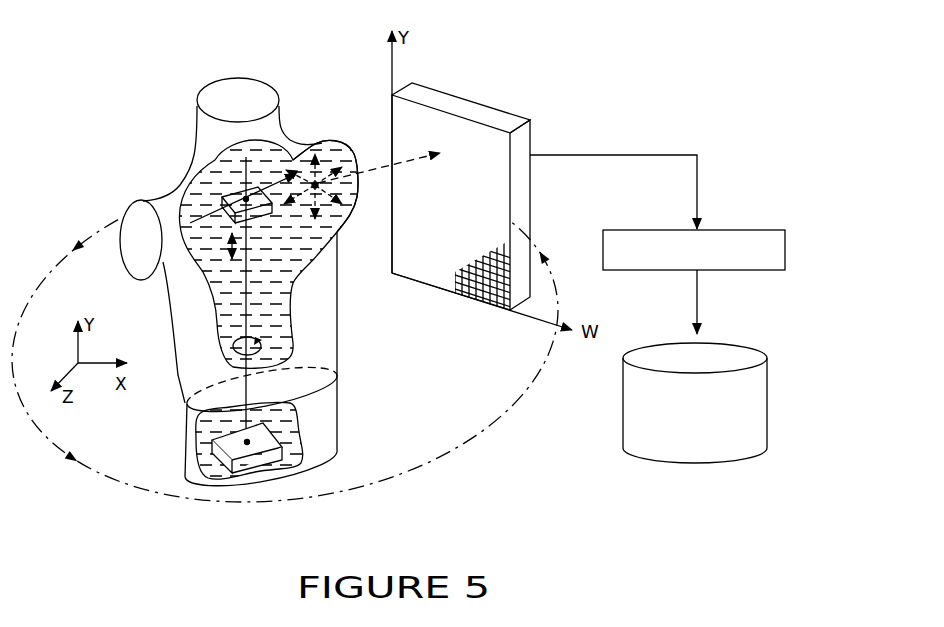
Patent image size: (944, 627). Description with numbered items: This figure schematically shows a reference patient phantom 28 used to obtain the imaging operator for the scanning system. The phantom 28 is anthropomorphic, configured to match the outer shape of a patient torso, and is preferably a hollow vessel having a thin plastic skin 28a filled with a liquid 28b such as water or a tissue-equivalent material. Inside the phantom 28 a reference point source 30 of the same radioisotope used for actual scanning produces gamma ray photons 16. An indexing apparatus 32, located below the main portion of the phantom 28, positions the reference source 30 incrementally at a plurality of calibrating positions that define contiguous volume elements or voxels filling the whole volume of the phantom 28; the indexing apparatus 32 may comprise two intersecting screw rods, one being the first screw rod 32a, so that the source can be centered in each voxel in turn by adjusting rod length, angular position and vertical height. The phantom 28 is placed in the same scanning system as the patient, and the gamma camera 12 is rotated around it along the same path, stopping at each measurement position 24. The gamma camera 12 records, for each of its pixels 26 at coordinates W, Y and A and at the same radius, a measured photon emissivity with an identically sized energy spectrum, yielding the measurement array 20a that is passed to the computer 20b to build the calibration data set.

The gamma camera 12 is at (483, 103).
The gamma ray photons 16 is at (343, 190).
The measurement data processing block 20a is at (737, 230).
The computer 20b is at (768, 397).
The measurement position 24 is at (510, 412).
The pixels 26 is at (482, 293).
The phantom 28 is at (148, 196).
The plastic skin 28a is at (193, 262).
The liquid 28b is at (268, 250).
The reference point source 30 is at (338, 159).
The indexing apparatus 32 is at (205, 435).
The first screw rod 32a is at (232, 168).